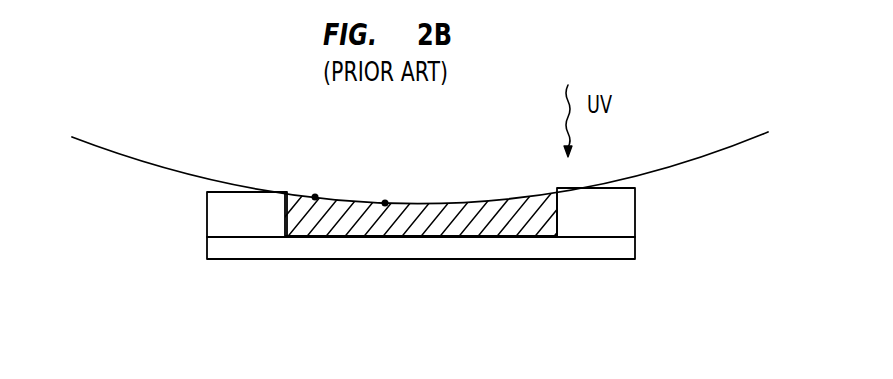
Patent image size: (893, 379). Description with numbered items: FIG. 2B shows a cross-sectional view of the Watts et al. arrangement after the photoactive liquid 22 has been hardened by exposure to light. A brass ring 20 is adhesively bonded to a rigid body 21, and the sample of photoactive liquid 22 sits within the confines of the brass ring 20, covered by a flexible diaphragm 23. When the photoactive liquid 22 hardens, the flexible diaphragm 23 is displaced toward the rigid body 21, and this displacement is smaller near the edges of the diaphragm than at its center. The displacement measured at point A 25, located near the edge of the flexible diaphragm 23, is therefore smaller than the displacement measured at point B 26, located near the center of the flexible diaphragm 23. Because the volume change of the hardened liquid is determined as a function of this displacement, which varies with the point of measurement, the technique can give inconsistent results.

The brass ring 20 is at (220, 218).
The rigid body 21 is at (638, 252).
The photoactive liquid 22 is at (343, 228).
The flexible diaphragm 23 is at (118, 170).
The point A 25 is at (316, 196).
The point B 26 is at (386, 202).